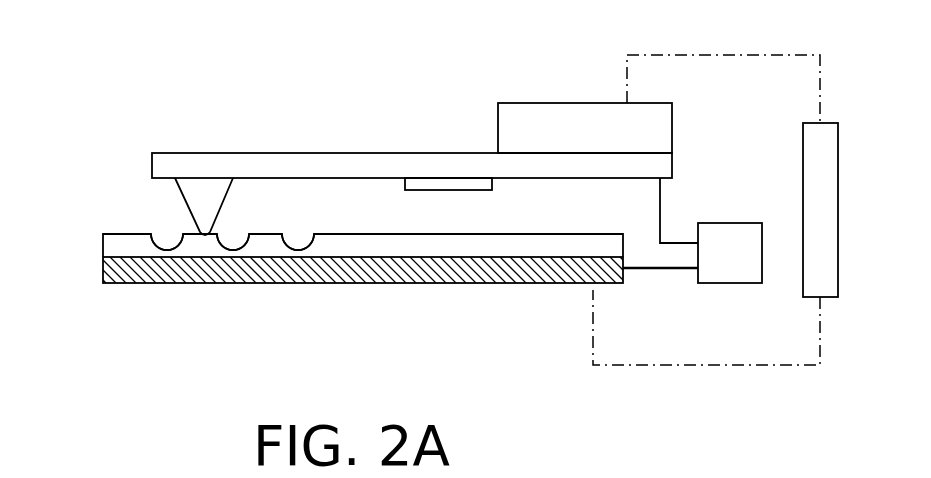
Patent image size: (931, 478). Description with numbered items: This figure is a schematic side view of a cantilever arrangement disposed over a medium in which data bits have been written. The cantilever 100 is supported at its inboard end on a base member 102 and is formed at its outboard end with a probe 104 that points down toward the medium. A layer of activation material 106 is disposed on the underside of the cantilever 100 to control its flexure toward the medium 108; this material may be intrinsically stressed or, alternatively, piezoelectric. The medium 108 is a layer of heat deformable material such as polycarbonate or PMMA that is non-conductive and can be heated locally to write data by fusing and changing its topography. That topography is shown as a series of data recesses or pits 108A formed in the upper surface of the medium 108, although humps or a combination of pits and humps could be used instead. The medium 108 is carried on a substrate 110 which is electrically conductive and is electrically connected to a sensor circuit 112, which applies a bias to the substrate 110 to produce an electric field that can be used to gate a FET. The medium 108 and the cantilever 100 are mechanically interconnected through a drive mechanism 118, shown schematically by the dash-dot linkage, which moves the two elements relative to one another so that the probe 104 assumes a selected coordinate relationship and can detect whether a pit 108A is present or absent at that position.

The cantilever 100 is at (225, 163).
The base member 102 is at (557, 108).
The probe 104 is at (195, 202).
The activation material 106 is at (435, 178).
The medium 108 is at (383, 245).
The pits 108A is at (298, 244).
The substrate 110 is at (435, 277).
The sensor circuit 112 is at (730, 273).
The drive mechanism 118 is at (822, 268).